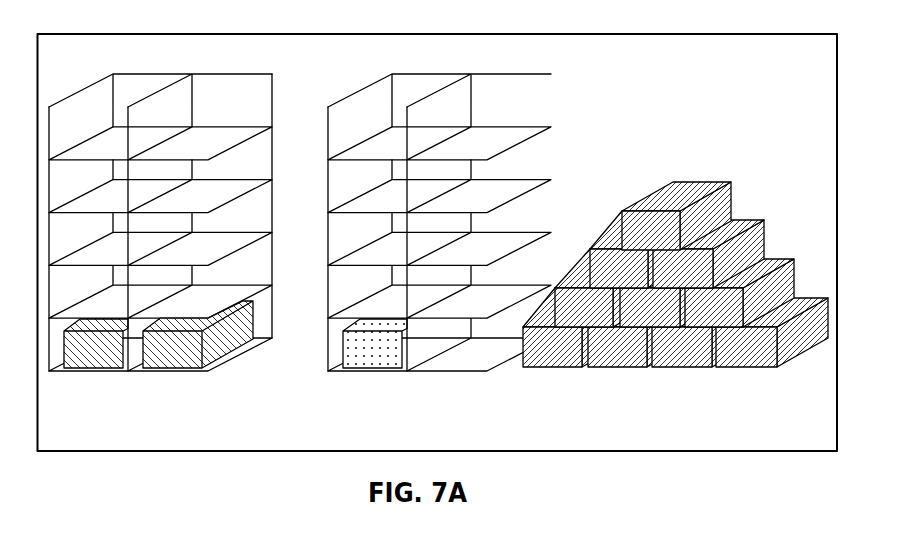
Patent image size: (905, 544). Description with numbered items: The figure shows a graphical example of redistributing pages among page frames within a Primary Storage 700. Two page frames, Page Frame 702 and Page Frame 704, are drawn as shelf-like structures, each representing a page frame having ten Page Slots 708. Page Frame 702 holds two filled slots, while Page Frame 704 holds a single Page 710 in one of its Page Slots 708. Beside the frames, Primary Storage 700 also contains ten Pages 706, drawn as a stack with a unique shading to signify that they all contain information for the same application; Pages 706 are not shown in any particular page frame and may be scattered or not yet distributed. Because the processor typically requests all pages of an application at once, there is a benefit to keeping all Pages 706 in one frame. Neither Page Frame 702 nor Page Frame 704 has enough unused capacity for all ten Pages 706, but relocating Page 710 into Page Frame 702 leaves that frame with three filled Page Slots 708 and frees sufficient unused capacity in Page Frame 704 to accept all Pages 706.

The primary storage 700 is at (763, 444).
The page frame 702 is at (186, 73).
The page frame 704 is at (466, 73).
The pages 706 is at (697, 186).
The page slots 708 is at (252, 167).
The page 710 is at (360, 347).